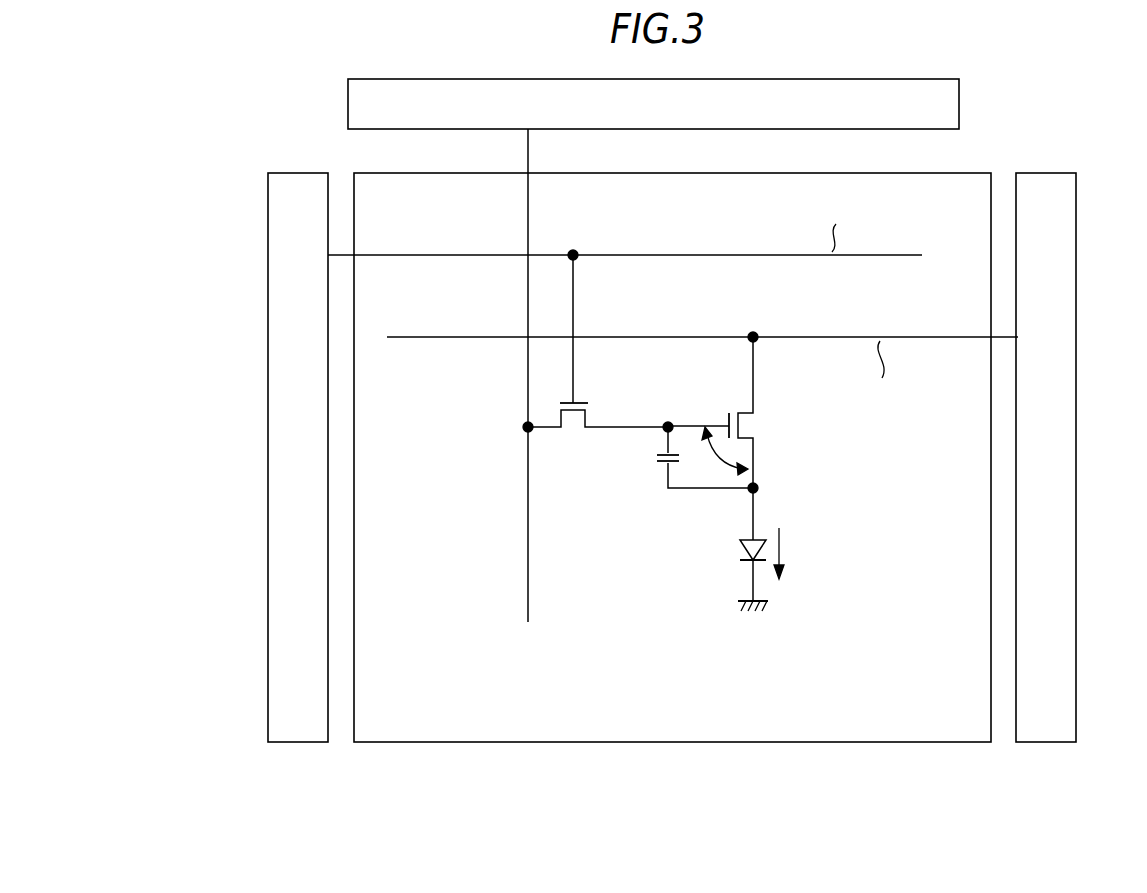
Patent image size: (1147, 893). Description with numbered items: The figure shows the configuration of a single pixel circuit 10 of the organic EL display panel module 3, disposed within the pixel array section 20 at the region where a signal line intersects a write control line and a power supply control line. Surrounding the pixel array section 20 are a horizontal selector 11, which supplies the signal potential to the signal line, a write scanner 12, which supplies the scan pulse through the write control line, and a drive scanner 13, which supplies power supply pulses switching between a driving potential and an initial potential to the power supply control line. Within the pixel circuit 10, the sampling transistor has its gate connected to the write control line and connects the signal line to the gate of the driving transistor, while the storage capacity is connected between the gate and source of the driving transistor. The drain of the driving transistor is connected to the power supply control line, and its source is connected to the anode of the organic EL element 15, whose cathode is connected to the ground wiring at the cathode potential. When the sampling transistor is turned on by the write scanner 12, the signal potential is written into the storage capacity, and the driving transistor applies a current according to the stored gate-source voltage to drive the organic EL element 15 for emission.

The organic EL display panel module 3 is at (188, 116).
The pixel circuit 10 is at (638, 540).
The horizontal selector 11 is at (348, 111).
The write scanner 12 is at (268, 242).
The drive scanner 13 is at (1076, 213).
The organic EL element 15 is at (740, 548).
The pixel array section 20 is at (593, 745).